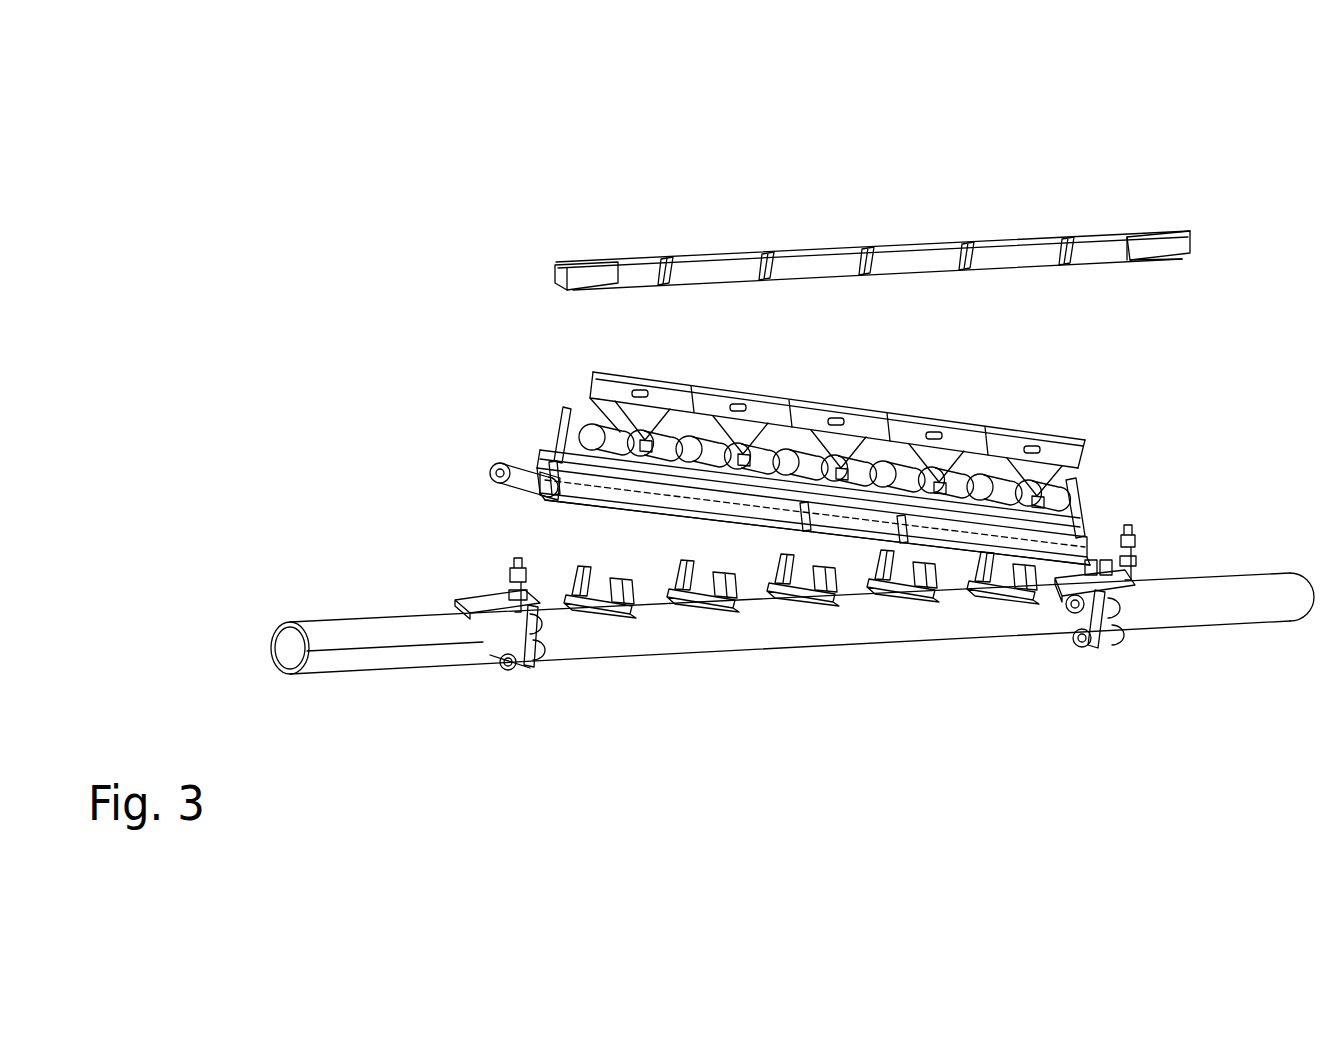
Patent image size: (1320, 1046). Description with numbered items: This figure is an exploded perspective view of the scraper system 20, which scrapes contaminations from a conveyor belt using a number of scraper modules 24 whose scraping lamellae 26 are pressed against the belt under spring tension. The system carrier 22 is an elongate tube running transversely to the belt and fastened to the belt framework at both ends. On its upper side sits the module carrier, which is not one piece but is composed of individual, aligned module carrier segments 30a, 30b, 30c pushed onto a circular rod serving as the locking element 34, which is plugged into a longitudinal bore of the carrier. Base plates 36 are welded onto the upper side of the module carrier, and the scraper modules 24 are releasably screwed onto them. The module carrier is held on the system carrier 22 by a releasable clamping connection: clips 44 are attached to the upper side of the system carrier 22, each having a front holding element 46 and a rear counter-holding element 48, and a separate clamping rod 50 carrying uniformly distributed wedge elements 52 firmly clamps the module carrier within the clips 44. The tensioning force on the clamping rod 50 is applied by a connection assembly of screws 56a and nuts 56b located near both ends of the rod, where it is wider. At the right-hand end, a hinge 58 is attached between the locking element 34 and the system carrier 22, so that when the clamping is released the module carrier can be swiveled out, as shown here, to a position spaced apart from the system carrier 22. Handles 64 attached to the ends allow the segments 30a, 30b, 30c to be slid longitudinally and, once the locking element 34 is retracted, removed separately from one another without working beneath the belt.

The scraper system 20 is at (578, 200).
The system carrier 22 is at (1198, 597).
The scraper modules 24 is at (750, 453).
The scraping lamellae 26 is at (775, 407).
The module carrier segment 30a is at (635, 490).
The module carrier segment 30b is at (886, 520).
The module carrier segment 30c is at (957, 530).
The locking element 34 is at (518, 462).
The base plates 36 is at (1025, 528).
The clips 44 is at (822, 604).
The front holding element 46 is at (923, 575).
The rear counter-holding element 48 is at (790, 567).
The clamping rod 50 is at (1030, 250).
The wedge elements 52 is at (967, 243).
The screws 56a is at (517, 582).
The nuts 56b is at (808, 719).
The hinge 58 is at (1122, 556).
The handles 64 is at (565, 433).